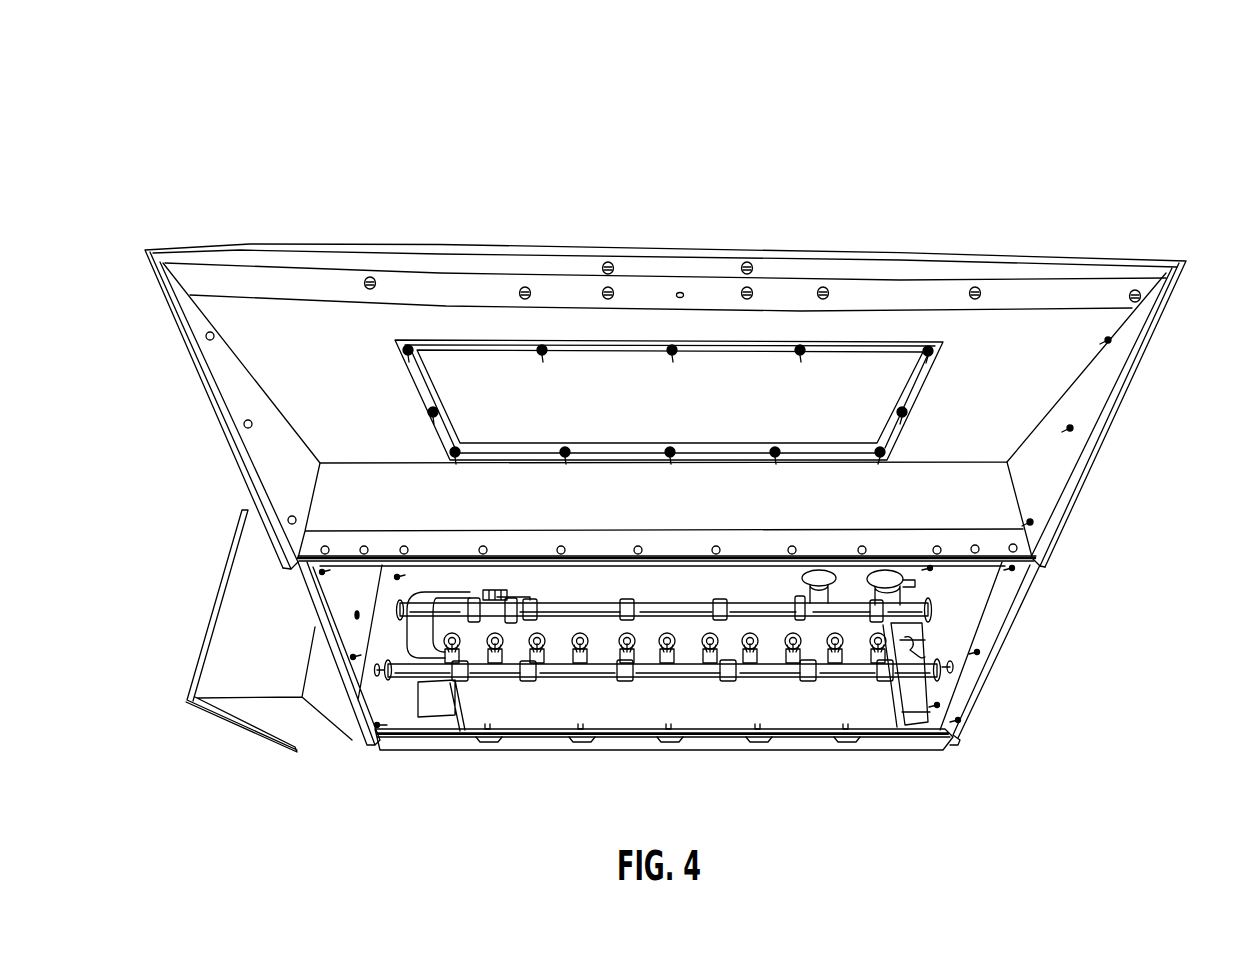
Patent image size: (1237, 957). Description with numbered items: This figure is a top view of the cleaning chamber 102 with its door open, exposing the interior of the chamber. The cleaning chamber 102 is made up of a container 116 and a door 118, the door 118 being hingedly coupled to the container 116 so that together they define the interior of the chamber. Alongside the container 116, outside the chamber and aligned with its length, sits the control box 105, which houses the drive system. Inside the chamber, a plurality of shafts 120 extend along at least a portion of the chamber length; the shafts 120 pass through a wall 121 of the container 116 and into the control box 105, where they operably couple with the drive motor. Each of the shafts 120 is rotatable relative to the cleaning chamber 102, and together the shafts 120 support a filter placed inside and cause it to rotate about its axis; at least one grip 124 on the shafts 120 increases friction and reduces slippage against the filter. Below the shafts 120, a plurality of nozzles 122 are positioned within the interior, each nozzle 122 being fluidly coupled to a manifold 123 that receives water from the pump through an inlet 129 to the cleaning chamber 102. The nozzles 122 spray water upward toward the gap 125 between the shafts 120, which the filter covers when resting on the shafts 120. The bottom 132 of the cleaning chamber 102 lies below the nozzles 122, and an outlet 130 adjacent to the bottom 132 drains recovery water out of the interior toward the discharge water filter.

The cleaning chamber 102 is at (922, 78).
The control box 105 is at (245, 628).
The container 116 is at (537, 707).
The door 118 is at (1020, 395).
The shafts 120 is at (767, 614).
The wall 121 is at (352, 597).
The nozzles 122 is at (584, 651).
The manifold 123 is at (688, 652).
The grip 124 is at (527, 674).
The gap 125 is at (602, 632).
The inlet 129 is at (818, 588).
The outlet 130 is at (905, 584).
The bottom 132 is at (877, 705).